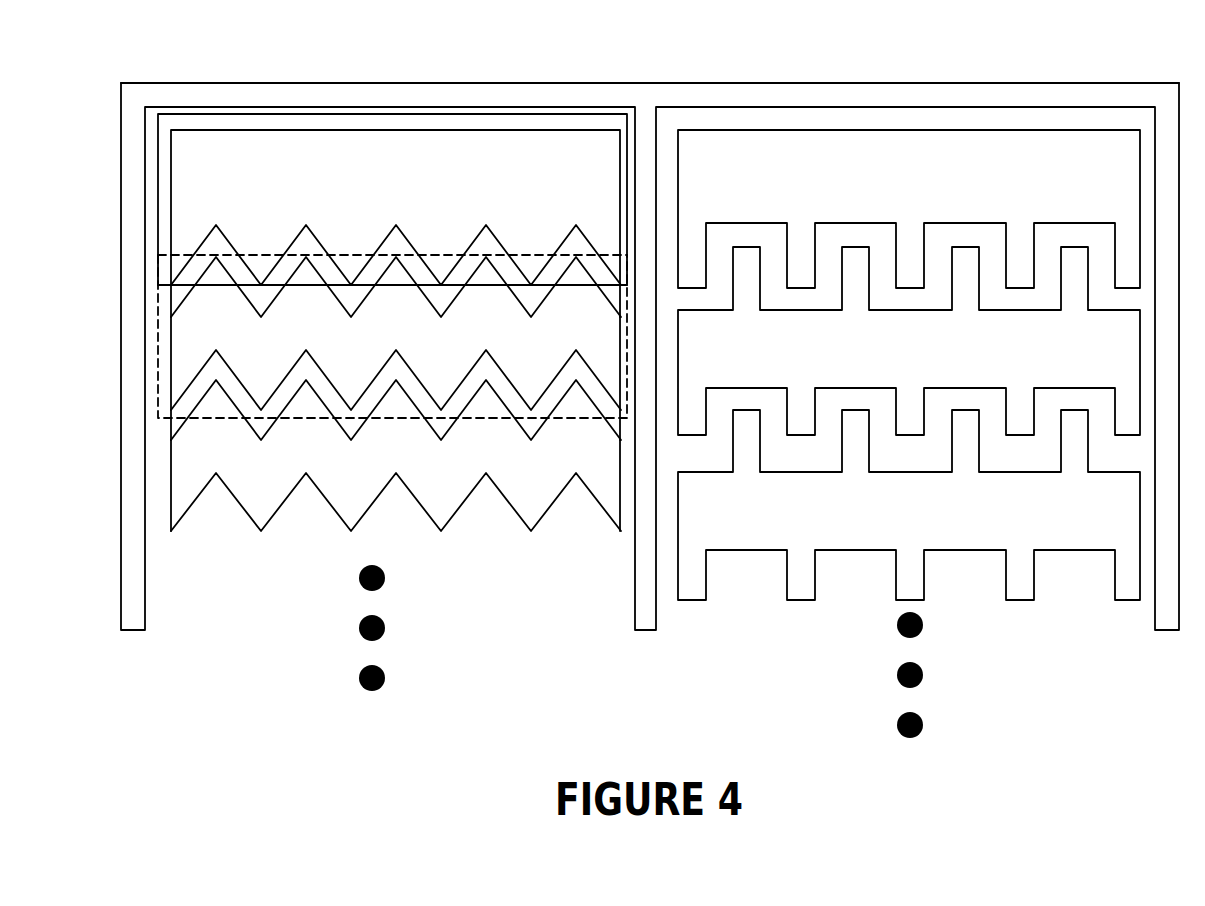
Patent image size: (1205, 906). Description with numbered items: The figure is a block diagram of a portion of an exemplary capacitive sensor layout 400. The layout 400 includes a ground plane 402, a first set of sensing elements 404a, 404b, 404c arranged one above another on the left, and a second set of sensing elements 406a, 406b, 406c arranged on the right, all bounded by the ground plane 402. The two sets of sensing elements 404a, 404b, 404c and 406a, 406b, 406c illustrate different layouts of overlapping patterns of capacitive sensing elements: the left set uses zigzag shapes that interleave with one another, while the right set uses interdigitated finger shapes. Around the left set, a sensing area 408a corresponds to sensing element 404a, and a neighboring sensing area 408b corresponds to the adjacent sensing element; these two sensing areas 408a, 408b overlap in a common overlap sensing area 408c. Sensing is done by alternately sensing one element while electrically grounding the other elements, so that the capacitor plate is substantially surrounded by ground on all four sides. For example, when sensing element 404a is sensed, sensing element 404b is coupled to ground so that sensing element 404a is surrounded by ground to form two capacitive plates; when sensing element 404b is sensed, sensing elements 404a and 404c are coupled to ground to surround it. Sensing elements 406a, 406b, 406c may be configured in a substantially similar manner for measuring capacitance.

The capacitive sensor layout 400 is at (128, 62).
The ground plane 402 is at (533, 83).
The sensing element 404a is at (413, 188).
The sensing element 404b is at (413, 345).
The sensing element 404c is at (413, 468).
The sensing element 406a is at (928, 193).
The sensing element 406b is at (928, 365).
The sensing element 406c is at (928, 523).
The sensing area 408a is at (107, 113).
The sensing area 408b is at (117, 257).
The overlap sensing area 408c is at (100, 256).